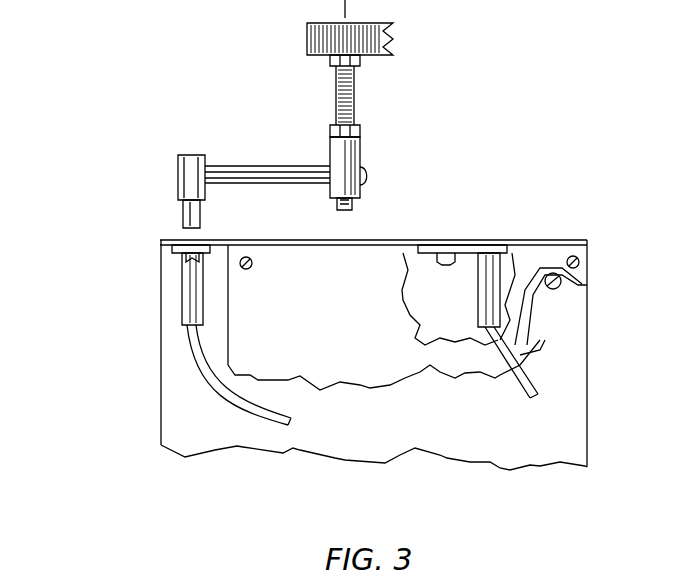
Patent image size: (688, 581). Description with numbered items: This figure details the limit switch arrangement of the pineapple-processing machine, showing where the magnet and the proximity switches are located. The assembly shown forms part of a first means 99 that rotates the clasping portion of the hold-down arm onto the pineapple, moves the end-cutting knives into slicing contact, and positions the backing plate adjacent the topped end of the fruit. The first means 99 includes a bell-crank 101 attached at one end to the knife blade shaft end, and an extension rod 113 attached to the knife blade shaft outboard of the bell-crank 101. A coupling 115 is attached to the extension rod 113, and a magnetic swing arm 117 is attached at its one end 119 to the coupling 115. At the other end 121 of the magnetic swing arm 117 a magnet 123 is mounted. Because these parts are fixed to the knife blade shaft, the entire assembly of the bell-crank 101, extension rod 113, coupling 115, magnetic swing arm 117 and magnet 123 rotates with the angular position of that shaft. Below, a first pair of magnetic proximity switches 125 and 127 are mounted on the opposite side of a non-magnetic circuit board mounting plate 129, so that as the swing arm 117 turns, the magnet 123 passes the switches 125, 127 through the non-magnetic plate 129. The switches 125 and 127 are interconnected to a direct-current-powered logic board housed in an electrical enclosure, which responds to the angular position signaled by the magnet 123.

The first means 99 is at (308, 147).
The bell-crank 101 is at (307, 44).
The extension rod 113 is at (353, 90).
The coupling 115 is at (353, 155).
The magnetic swing arm 117 is at (262, 165).
The one end of magnetic swing arm 119 is at (368, 176).
The other end of magnetic swing arm 121 is at (208, 185).
The magnet 123 is at (190, 213).
The magnetic proximity switch 125 is at (190, 292).
The magnetic proximity switch 127 is at (507, 258).
The non-magnetic circuit board mounting plate 129 is at (410, 242).